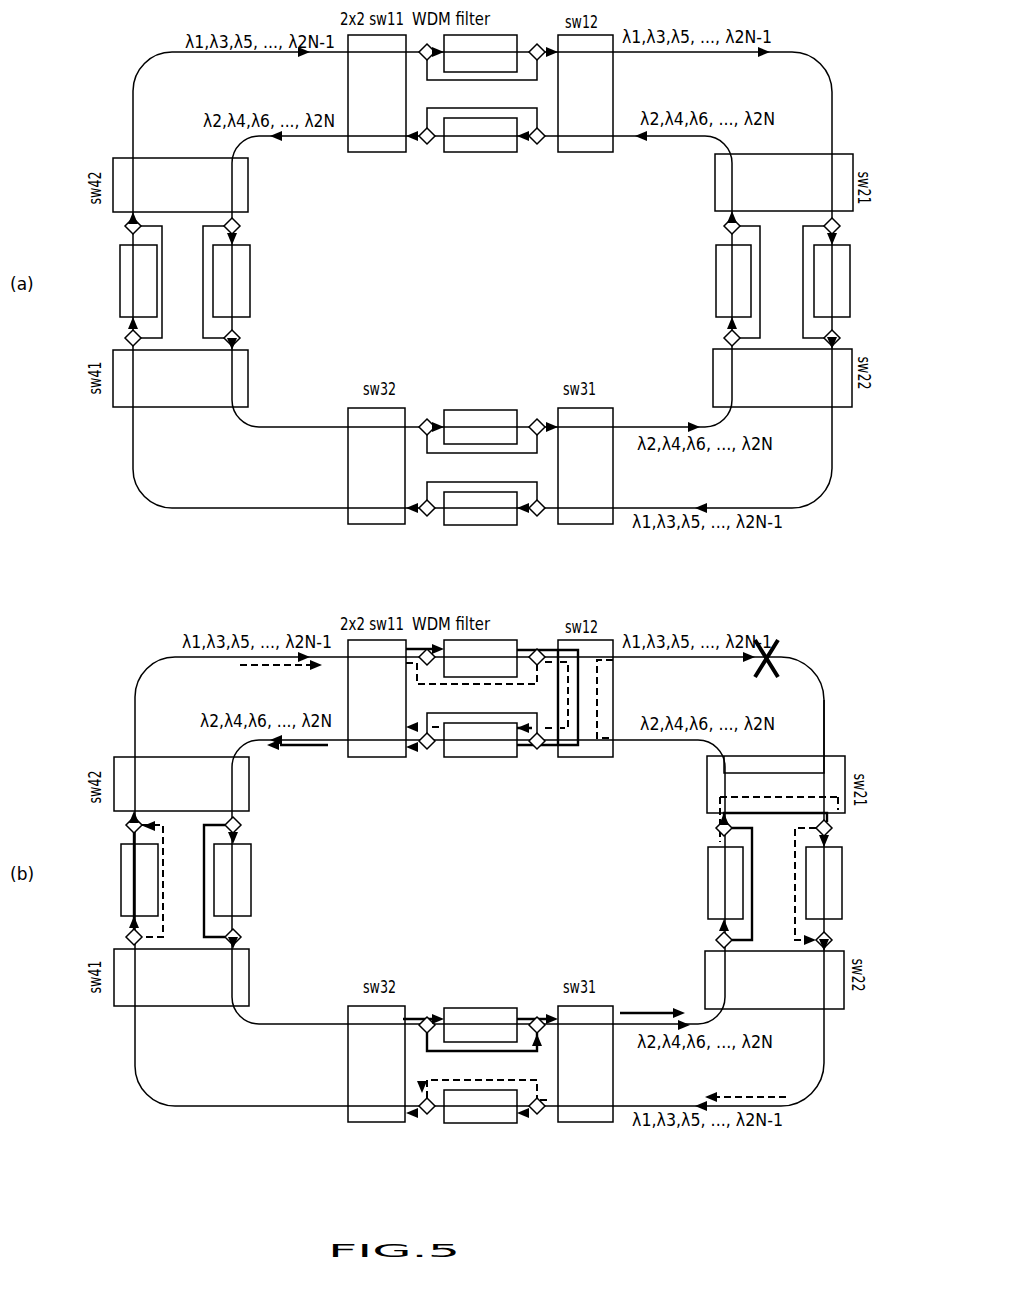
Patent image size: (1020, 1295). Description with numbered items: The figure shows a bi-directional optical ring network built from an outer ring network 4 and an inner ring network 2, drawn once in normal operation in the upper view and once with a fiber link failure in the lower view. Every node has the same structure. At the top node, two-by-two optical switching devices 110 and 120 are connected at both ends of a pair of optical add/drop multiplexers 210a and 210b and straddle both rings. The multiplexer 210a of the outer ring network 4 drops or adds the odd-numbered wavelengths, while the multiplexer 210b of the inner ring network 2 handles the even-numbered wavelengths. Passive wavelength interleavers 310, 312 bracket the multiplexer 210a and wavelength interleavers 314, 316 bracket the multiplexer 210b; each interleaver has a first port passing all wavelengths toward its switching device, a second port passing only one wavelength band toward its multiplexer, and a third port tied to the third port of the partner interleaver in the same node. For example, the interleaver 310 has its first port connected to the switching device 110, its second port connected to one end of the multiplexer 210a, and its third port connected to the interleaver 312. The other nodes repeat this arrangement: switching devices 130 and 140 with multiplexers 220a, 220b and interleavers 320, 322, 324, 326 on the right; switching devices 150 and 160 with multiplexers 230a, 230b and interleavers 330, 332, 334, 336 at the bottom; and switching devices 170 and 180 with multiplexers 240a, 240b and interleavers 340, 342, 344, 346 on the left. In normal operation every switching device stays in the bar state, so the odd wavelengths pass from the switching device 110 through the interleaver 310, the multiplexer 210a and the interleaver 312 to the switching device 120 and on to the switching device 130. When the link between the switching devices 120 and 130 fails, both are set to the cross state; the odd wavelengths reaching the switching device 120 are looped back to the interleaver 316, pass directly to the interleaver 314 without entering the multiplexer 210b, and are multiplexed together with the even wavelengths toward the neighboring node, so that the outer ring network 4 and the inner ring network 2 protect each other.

The inner ring network 2 is at (300, 427).
The outer ring network 4 is at (245, 508).
The optical switching device 110 is at (381, 410).
The optical switching device 120 is at (567, 410).
The optical switching device 130 is at (756, 498).
The 2x2 optical switch sw22 140 is at (754, 679).
The 2x2 optical switch sw31 150 is at (592, 779).
The 2x2 optical switch sw32 160 is at (379, 780).
The 2x2 optical switch sw41 170 is at (206, 677).
The 2x2 optical switch sw42 180 is at (206, 484).
The optical add/drop multiplexer 210a is at (471, 342).
The optical add/drop multiplexer 210b is at (482, 447).
The optical add/drop multiplexer OADM2a 220a is at (850, 583).
The optical add/drop multiplexer OADM2b 220b is at (737, 583).
The optical add/drop multiplexer OADM3a 230a is at (482, 818).
The optical add/drop multiplexer OADM3b 230b is at (482, 713).
The optical add/drop multiplexer OADM4a 240a is at (112, 583).
The optical add/drop multiplexer OADM4b 240b is at (256, 581).
The wavelength interleaver 310 is at (427, 60).
The wavelength interleaver 312 is at (546, 332).
The wavelength interleaver 314 is at (434, 457).
The wavelength interleaver 316 is at (545, 457).
The WDM filter 320 is at (852, 530).
The WDM filter 322 is at (852, 636).
The WDM filter 324 is at (702, 530).
The WDM filter 326 is at (702, 636).
The WDM filter 330 is at (543, 827).
The WDM filter 332 is at (434, 827).
The WDM filter 334 is at (542, 704).
The WDM filter 336 is at (433, 704).
The WDM filter 340 is at (109, 634).
The WDM filter 342 is at (109, 528).
The WDM filter 344 is at (257, 634).
The WDM filter 346 is at (257, 528).